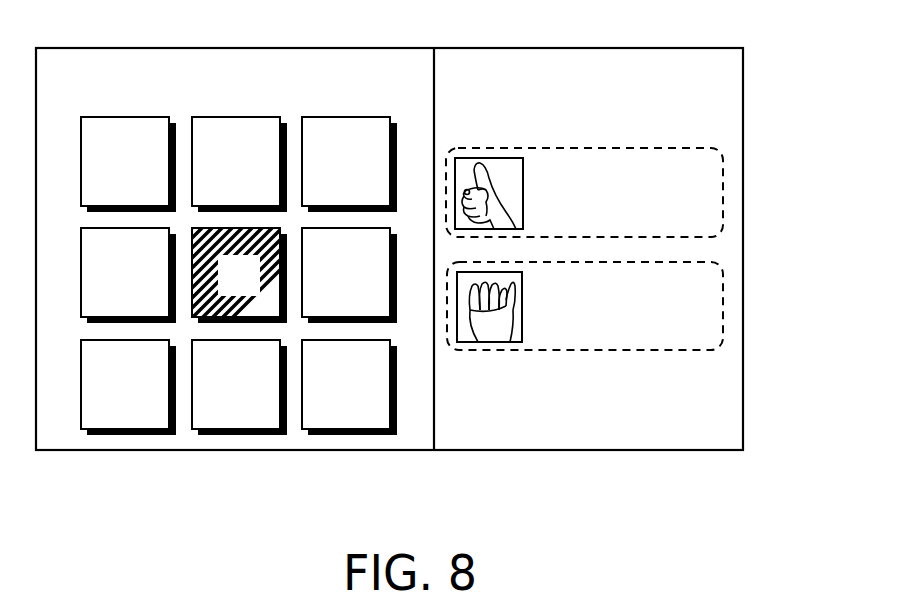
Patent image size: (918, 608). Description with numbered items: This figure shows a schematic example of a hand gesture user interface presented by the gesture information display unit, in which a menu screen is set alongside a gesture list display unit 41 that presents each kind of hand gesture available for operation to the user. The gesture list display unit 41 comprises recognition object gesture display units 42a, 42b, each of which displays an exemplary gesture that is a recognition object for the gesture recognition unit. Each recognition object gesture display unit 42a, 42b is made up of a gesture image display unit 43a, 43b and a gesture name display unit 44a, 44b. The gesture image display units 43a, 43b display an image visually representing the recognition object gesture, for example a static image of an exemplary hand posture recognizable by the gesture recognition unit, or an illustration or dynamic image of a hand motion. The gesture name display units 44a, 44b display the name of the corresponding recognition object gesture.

The gesture list display unit 41 is at (589, 47).
The recognition object gesture display unit 42a is at (726, 195).
The recognition object gesture display unit 42b is at (726, 305).
The gesture image display unit 43a is at (494, 158).
The gesture image display unit 43b is at (490, 342).
The gesture name display unit 44a is at (619, 178).
The gesture name display unit 44b is at (573, 325).